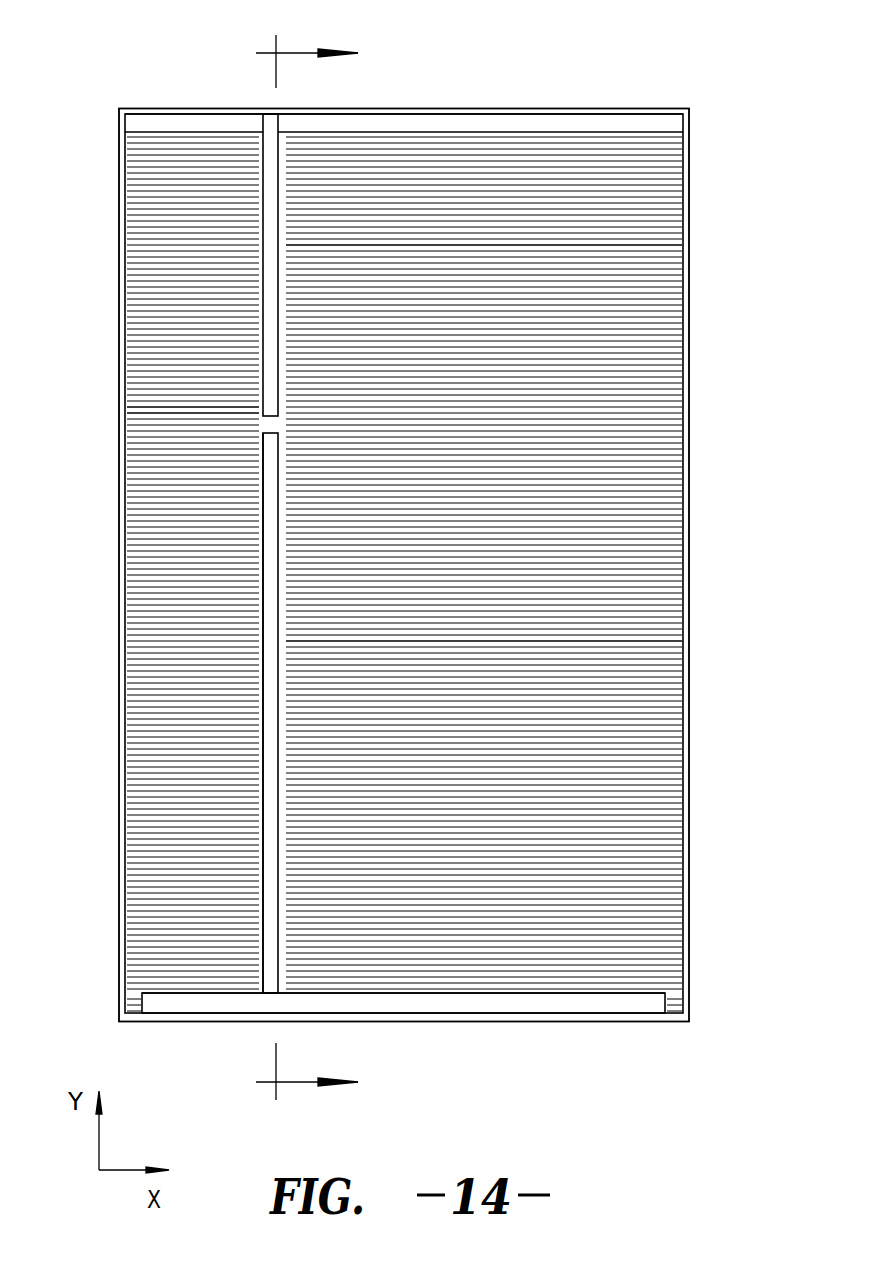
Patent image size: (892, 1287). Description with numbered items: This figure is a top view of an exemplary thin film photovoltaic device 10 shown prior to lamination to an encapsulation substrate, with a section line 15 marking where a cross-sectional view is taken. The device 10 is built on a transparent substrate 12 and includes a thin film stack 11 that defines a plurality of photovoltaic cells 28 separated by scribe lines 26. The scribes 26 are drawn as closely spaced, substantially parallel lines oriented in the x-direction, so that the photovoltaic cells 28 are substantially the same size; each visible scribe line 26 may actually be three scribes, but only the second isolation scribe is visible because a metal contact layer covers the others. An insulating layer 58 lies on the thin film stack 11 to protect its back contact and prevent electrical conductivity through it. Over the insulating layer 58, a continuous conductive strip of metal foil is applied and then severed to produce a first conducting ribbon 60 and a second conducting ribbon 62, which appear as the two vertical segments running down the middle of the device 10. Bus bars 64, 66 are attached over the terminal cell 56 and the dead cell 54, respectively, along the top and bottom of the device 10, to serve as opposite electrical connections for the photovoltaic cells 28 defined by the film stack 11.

The thin film photovoltaic device 10 is at (133, 85).
The thin film stack 11 is at (163, 410).
The transparent substrate 12 is at (688, 802).
The section line 15- 15 is at (309, 568).
The scribe lines 26 is at (152, 760).
The photovoltaic cells 28 is at (635, 250).
The dead cell 54 is at (586, 120).
The terminal cell 56 is at (442, 1002).
The insulating layer 58 is at (263, 630).
The first conducting ribbon 60 is at (275, 523).
The second conducting ribbon 62 is at (273, 232).
The bus bar 64 is at (455, 120).
The bus bar 66 is at (578, 1002).